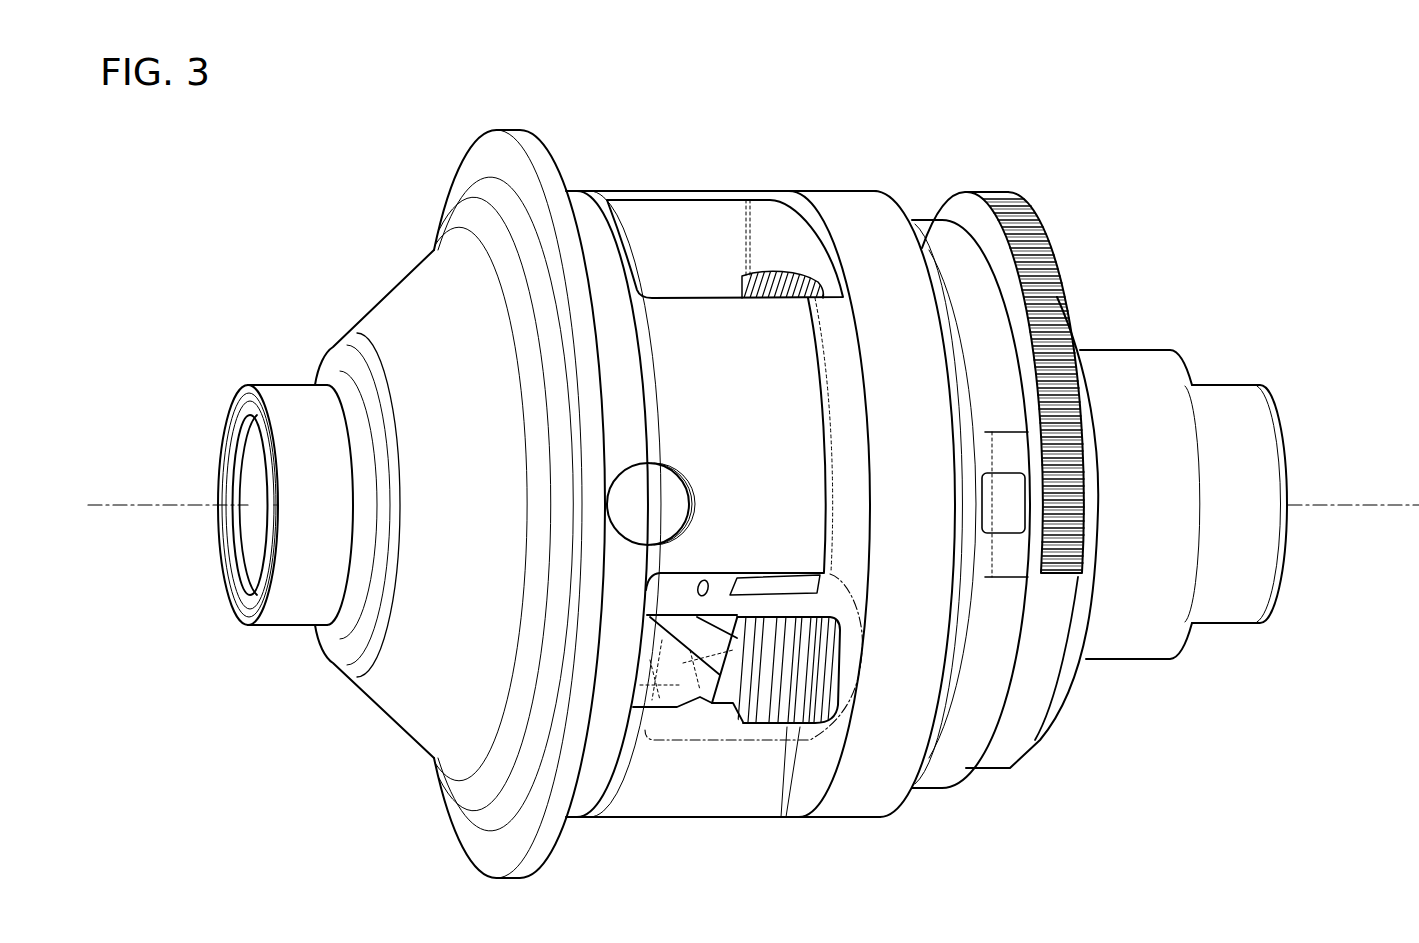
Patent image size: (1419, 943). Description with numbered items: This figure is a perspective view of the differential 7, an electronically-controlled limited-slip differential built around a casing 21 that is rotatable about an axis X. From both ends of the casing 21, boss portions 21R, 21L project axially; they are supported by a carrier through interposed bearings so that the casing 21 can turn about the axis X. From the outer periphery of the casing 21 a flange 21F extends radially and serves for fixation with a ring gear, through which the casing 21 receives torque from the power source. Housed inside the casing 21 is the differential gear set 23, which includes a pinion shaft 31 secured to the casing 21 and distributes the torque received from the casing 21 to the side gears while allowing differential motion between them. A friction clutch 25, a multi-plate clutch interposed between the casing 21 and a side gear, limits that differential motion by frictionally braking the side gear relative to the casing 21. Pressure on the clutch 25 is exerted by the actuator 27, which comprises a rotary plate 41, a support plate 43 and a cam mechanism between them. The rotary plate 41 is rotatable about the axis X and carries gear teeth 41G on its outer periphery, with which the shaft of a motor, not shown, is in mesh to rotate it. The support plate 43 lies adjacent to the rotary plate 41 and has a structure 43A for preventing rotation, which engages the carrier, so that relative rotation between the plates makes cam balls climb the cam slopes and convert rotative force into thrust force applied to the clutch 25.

The differential 7 is at (907, 124).
The casing 21 is at (829, 190).
The boss portion 21L is at (279, 380).
The boss portion 21R is at (1220, 395).
The flange 21F is at (497, 128).
The differential gear set 23 is at (668, 713).
The friction clutch 25 is at (790, 727).
The actuator 27 is at (970, 814).
The pinion shaft 31 is at (665, 487).
The rotary plate 41 is at (1023, 474).
The gear teeth 41G is at (1033, 203).
The support plate 43 is at (972, 532).
The structure for preventing rotation 43A is at (1010, 452).
The axis X is at (1387, 495).